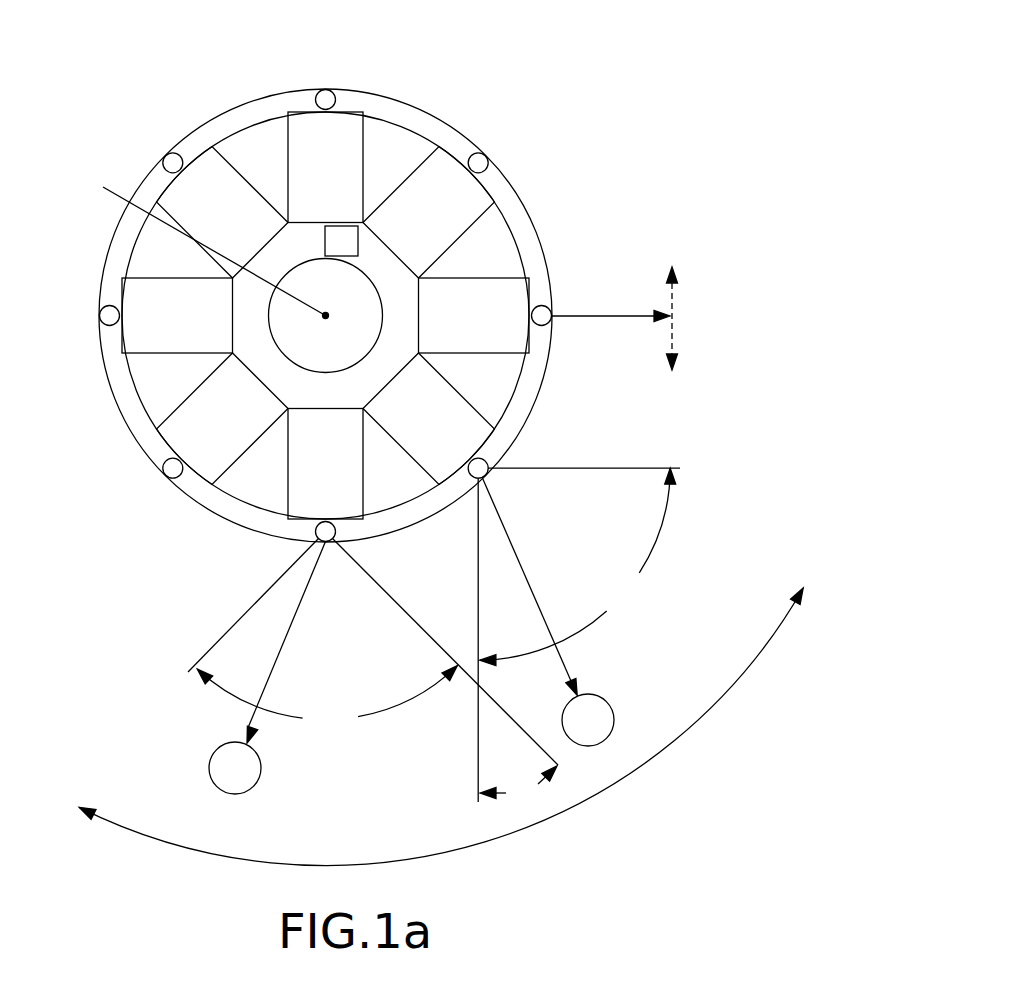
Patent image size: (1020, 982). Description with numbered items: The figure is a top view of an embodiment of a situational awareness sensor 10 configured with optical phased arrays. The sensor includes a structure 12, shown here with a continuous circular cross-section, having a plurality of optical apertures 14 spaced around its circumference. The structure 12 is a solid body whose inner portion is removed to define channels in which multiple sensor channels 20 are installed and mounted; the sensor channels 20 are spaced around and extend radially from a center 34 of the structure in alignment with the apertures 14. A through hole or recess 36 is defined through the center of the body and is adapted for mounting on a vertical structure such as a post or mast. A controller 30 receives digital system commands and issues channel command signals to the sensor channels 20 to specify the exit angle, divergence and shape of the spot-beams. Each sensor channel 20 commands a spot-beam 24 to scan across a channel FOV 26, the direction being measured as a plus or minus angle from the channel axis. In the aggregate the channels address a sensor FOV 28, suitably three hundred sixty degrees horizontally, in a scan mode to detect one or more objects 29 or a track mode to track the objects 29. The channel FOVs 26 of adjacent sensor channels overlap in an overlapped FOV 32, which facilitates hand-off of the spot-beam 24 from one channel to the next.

The situational awareness sensor 10 is at (541, 100).
The structure 12 is at (125, 398).
The optical apertures 14 is at (546, 328).
The sensor channels 20 is at (447, 210).
The spot-beam 24 is at (620, 316).
The channel FOV 26 is at (436, 602).
The sensor FOV 28 is at (676, 741).
The objects 29 is at (262, 770).
The controller 30 is at (332, 252).
The overlapped FOV 32 is at (518, 784).
The center 34 is at (205, 242).
The through hole or recess 36 is at (336, 304).